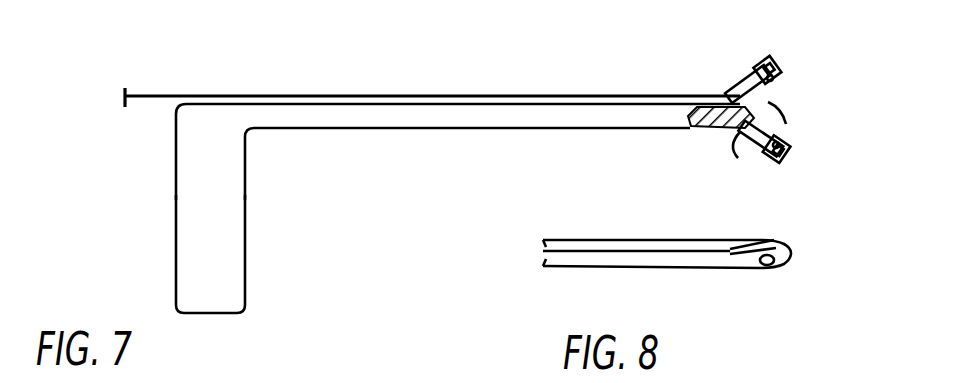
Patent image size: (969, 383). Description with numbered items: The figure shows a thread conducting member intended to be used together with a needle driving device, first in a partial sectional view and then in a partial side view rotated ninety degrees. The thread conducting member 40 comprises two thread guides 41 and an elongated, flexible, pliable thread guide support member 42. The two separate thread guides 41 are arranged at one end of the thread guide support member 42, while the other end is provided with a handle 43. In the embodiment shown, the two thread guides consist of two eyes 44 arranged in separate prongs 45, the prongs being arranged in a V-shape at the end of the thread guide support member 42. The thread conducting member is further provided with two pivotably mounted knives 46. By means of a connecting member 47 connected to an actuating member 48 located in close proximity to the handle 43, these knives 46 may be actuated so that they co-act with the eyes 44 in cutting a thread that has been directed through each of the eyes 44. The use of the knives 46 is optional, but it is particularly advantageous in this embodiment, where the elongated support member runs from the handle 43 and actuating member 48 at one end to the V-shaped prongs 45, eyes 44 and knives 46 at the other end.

In FIG. 7, the tubular sheath 40 is at (351, 91).
In FIG. 8, the tubular sheath 40 is at (607, 237).
In FIG. 8, the thread guide 41 is at (767, 260).
In FIG. 7, the thread guide support member 42 is at (387, 117).
In FIG. 7, the handle 43 is at (226, 260).
In FIG. 7, the eye 44 is at (771, 108).
In FIG. 8, the eye 44 is at (765, 272).
In FIG. 8, the prong 45 is at (790, 251).
In FIG. 8, the knife 46 is at (747, 235).
In FIG. 7, the actuating rod 47 is at (413, 94).
In FIG. 8, the actuating rod 47 is at (633, 258).
In FIG. 7, the actuating member 48 is at (124, 92).